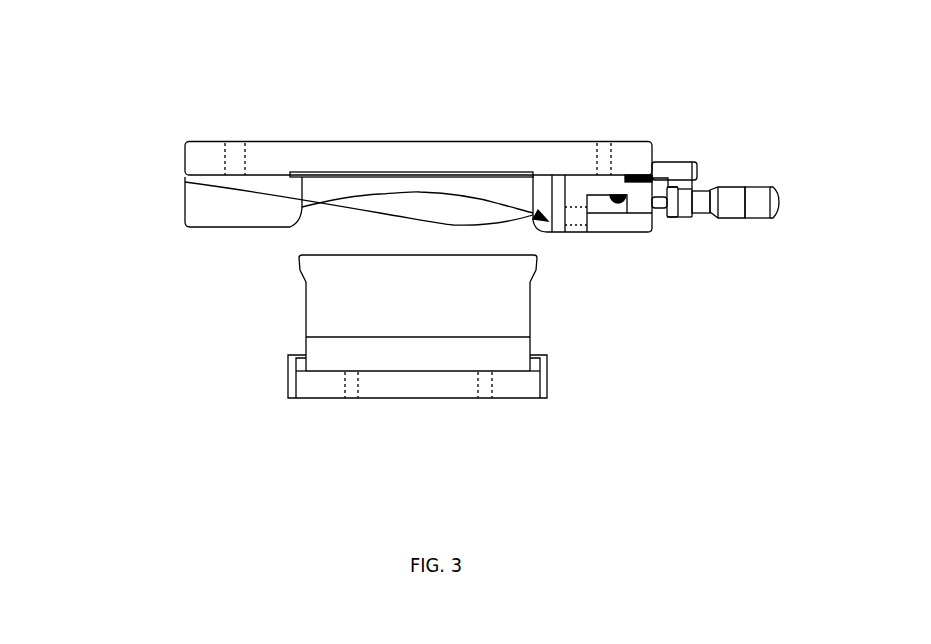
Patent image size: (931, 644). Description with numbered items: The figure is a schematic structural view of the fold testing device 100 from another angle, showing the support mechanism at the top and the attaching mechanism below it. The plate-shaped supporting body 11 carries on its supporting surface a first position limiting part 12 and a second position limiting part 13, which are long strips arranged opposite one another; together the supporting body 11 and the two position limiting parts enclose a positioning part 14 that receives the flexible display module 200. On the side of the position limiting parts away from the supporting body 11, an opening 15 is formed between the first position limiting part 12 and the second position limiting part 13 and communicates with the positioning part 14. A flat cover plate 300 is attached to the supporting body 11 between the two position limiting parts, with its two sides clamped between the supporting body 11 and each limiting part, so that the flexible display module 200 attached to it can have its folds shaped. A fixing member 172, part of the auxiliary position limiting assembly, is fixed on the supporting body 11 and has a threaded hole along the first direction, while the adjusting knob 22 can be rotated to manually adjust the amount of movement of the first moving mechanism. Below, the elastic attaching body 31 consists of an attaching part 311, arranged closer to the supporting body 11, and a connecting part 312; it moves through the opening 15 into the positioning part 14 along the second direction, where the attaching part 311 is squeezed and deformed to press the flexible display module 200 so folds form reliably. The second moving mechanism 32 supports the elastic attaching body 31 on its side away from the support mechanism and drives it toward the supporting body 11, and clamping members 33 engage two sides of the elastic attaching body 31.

The fold testing device 100 is at (103, 39).
The supporting body 11 is at (203, 150).
The first position limiting part 12 is at (185, 182).
The second position limiting part 13 is at (205, 212).
The positioning part 14 is at (92, 122).
The opening 15 is at (385, 223).
The flexible display module 200 is at (375, 190).
The cover plate 300 is at (432, 172).
The fixing member 172 is at (600, 192).
The adjusting knob 22 is at (752, 197).
The elastic attaching body 31 is at (401, 355).
The attaching part 311 is at (398, 257).
The connecting part 312 is at (398, 357).
The second moving mechanism 32 is at (414, 390).
The clamping members 33 is at (548, 379).